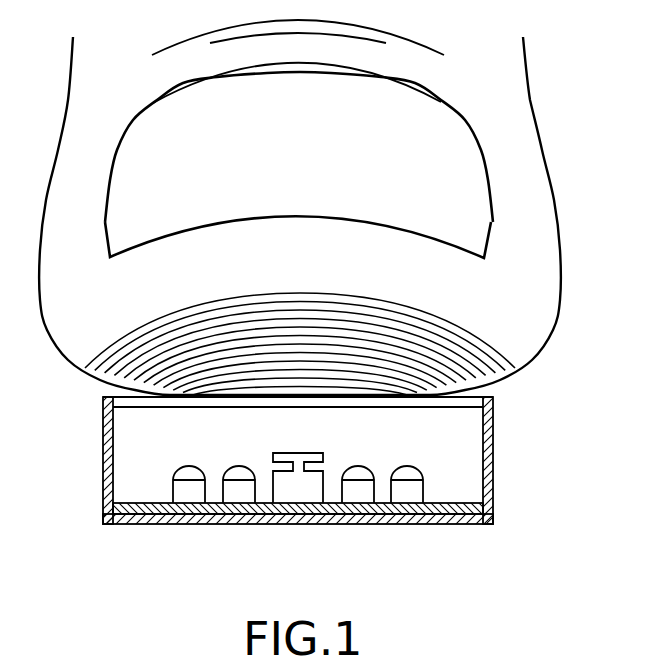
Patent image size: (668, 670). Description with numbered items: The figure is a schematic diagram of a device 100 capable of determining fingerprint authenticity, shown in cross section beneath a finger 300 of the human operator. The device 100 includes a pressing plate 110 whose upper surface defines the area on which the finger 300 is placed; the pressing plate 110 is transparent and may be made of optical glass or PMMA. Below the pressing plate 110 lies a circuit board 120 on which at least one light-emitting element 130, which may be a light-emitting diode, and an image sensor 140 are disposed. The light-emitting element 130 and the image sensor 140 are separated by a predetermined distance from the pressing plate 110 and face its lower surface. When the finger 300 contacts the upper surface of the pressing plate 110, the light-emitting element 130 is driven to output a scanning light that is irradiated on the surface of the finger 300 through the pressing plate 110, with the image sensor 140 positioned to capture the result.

The finger 300 is at (531, 212).
The device 100 is at (351, 479).
The pressing plate 110 is at (472, 401).
The circuit board 120 is at (483, 503).
The light-emitting element 130 is at (412, 490).
The image sensor 140 is at (298, 490).